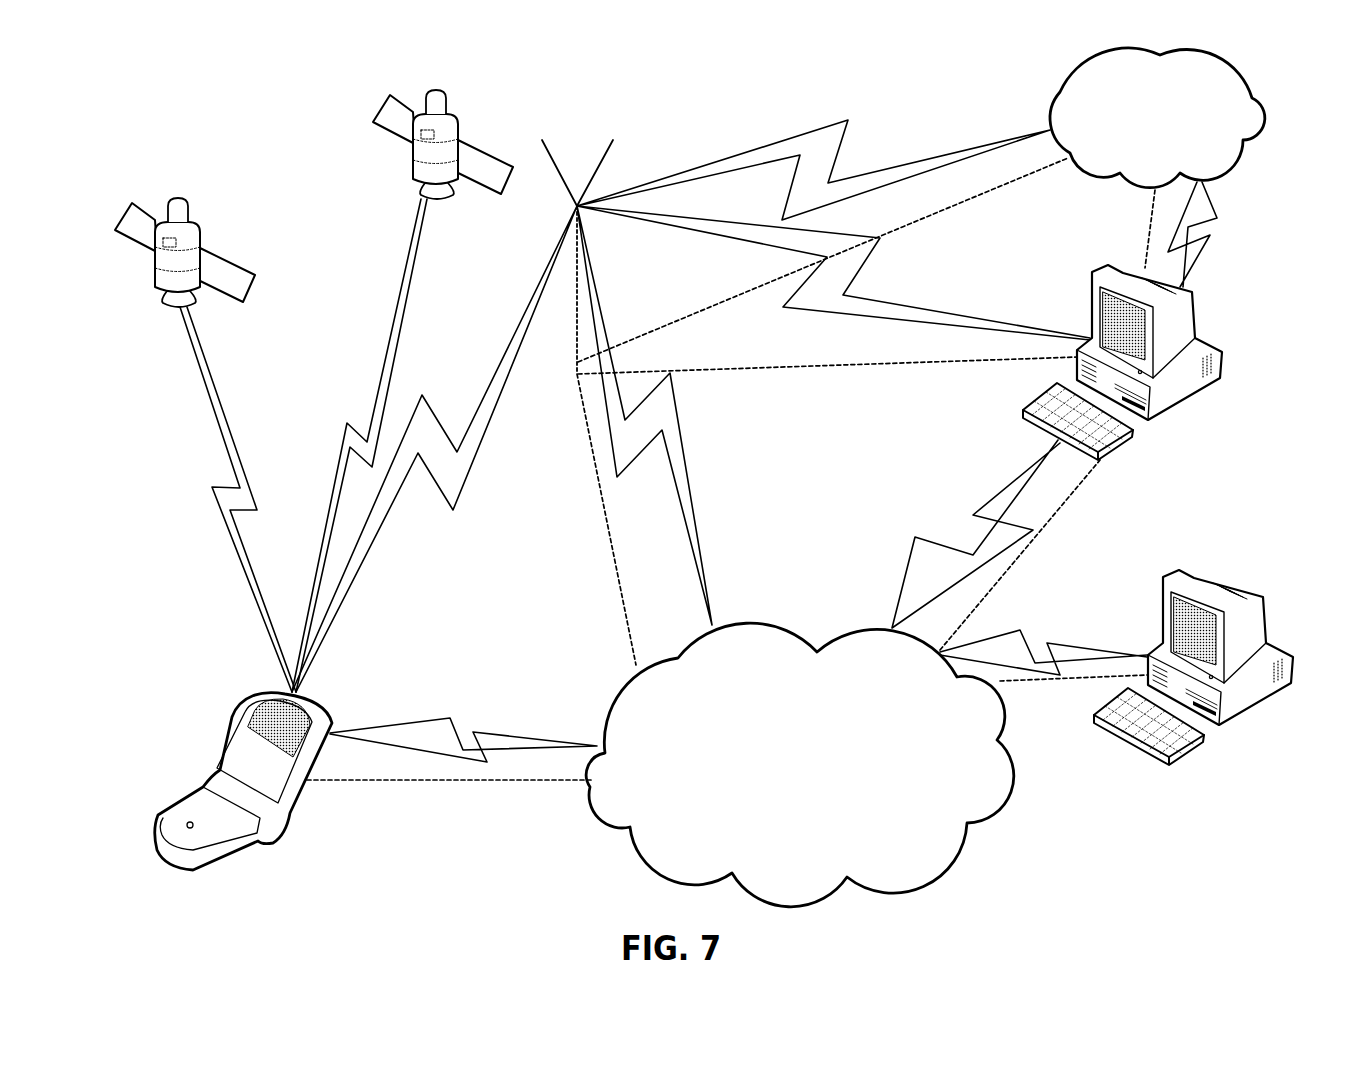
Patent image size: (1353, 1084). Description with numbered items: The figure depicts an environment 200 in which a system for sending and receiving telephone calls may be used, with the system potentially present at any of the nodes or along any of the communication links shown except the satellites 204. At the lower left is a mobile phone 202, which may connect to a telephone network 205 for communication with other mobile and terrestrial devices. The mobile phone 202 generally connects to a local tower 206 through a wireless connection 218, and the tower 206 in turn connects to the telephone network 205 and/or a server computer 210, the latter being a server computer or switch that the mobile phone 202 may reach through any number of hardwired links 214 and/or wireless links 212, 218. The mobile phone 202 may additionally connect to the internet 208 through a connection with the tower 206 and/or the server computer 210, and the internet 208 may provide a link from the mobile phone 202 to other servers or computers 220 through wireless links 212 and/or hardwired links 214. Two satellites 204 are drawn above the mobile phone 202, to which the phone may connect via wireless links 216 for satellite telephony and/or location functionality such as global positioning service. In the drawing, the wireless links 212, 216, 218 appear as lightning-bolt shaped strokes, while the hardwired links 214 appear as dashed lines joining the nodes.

The environment 200 is at (696, 125).
The mobile phone 202 is at (247, 714).
The satellites 204 is at (163, 212).
The telephone network 205 is at (1053, 93).
The local tower 206 is at (576, 350).
The internet 208 is at (815, 645).
The server computer 210 is at (1177, 404).
The wireless links 212 is at (940, 311).
The hardwired links 214 is at (1148, 230).
The wireless links 216 is at (213, 383).
The wireless connection 218 is at (461, 490).
The other servers or computers 220 is at (1198, 577).